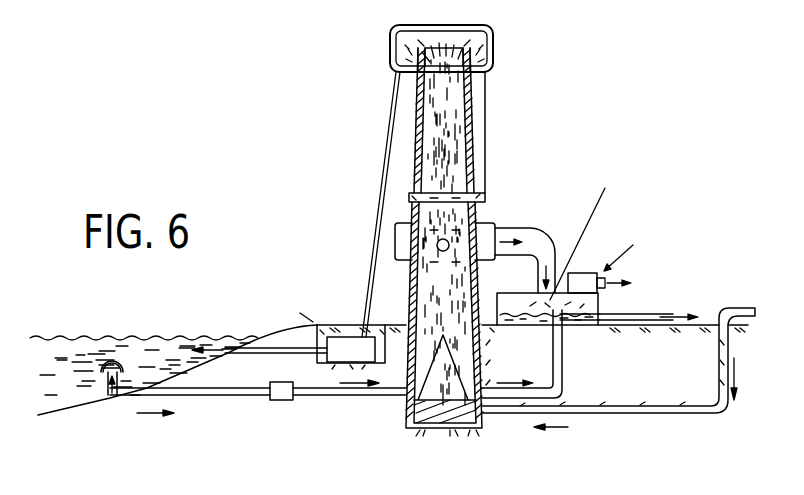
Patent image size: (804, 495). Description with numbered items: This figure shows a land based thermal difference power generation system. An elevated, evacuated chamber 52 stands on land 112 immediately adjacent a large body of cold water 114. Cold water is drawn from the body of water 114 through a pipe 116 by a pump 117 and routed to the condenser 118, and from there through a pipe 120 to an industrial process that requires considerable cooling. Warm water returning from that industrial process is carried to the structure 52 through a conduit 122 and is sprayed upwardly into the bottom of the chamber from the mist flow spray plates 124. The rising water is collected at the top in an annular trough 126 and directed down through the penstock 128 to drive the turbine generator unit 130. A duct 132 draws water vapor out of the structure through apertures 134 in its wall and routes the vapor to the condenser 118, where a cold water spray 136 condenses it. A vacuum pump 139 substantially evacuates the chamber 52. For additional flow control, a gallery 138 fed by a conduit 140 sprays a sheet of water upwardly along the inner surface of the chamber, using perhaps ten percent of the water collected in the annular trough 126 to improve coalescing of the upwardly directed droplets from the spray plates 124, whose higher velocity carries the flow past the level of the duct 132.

The elevated chamber 52 is at (467, 100).
The land 112 is at (532, 365).
The body of cold water 114 is at (173, 370).
The pipe 116 is at (213, 392).
The pump 117 is at (272, 384).
The condenser 118 is at (582, 317).
The pipe 120 is at (637, 317).
The conduit 122 is at (727, 307).
The mist flow spray plates 124 is at (407, 432).
The annular trough 126 is at (402, 62).
The penstock 128 is at (397, 100).
The turbine generator unit 130 is at (348, 340).
The duct 132 is at (493, 223).
The apertures 134 is at (413, 245).
The cold water spray 136 is at (552, 312).
The gallery 138 is at (580, 280).
The vacuum pump 139 is at (480, 193).
The conduit 140 is at (487, 122).